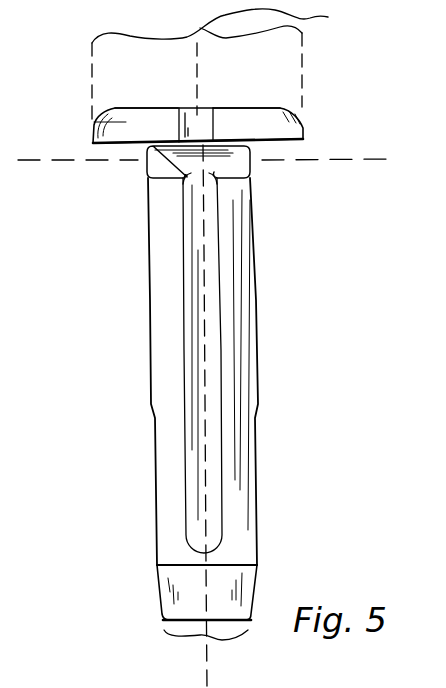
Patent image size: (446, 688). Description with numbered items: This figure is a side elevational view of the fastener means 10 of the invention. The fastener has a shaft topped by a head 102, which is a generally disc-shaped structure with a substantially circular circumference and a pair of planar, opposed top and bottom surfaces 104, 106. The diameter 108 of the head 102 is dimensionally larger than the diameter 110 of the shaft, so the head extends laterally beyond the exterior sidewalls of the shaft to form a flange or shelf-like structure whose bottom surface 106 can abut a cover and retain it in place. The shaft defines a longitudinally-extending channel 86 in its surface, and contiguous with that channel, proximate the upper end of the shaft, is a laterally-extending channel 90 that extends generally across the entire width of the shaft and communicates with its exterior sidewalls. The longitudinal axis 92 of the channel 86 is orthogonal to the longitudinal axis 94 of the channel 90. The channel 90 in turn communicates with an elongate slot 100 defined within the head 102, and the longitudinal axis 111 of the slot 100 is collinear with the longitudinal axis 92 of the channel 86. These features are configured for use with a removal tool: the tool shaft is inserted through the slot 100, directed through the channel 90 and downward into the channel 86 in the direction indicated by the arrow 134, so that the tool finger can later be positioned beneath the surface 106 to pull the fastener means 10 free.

The fastener means 10 is at (149, 358).
The longitudinally-extending channel 86 is at (218, 504).
The laterally-extending channel 90 is at (147, 170).
The longitudinal axis of channel 86 92 is at (198, 78).
The longitudinal axis of channel 90 94 is at (392, 158).
The elongate slot 100 is at (213, 107).
The head 102 is at (97, 123).
The top surface of head 104 is at (148, 106).
The bottom surface of head 106 is at (106, 147).
The diameter of head 108 is at (229, 64).
The diameter of shaft 110 is at (214, 640).
The longitudinal axis of slot 100 111 is at (196, 57).
The arrow 134 is at (224, 687).